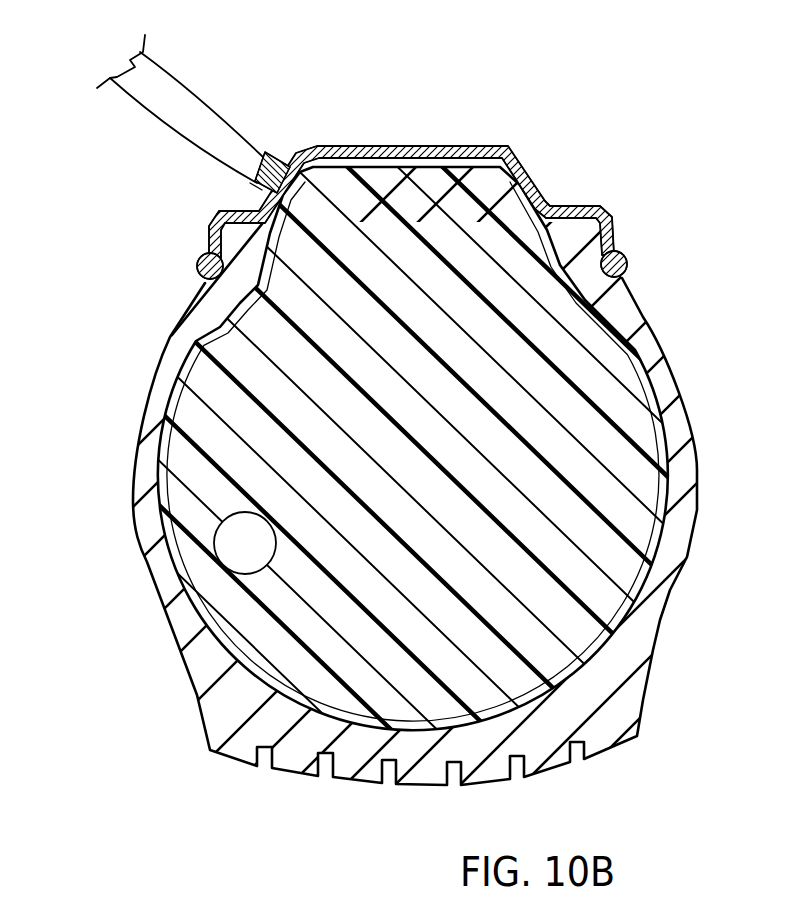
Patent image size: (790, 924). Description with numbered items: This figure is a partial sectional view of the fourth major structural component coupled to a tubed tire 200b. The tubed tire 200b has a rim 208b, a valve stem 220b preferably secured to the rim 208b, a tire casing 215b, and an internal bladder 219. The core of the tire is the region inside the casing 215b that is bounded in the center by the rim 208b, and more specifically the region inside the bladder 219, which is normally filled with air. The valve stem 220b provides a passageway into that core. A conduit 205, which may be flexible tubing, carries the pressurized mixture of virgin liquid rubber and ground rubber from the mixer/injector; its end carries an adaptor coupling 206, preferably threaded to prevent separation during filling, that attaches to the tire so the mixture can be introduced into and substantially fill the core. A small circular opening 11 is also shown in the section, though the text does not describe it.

The tubed tire 200b is at (374, 822).
The conduit 205 is at (172, 74).
The adaptor coupling 206 is at (247, 189).
The rim 208b is at (613, 231).
The valve passage 11 is at (223, 566).
The tire casing 215b is at (223, 708).
The internal bladder 219 is at (162, 492).
The valve stem 220b is at (281, 156).